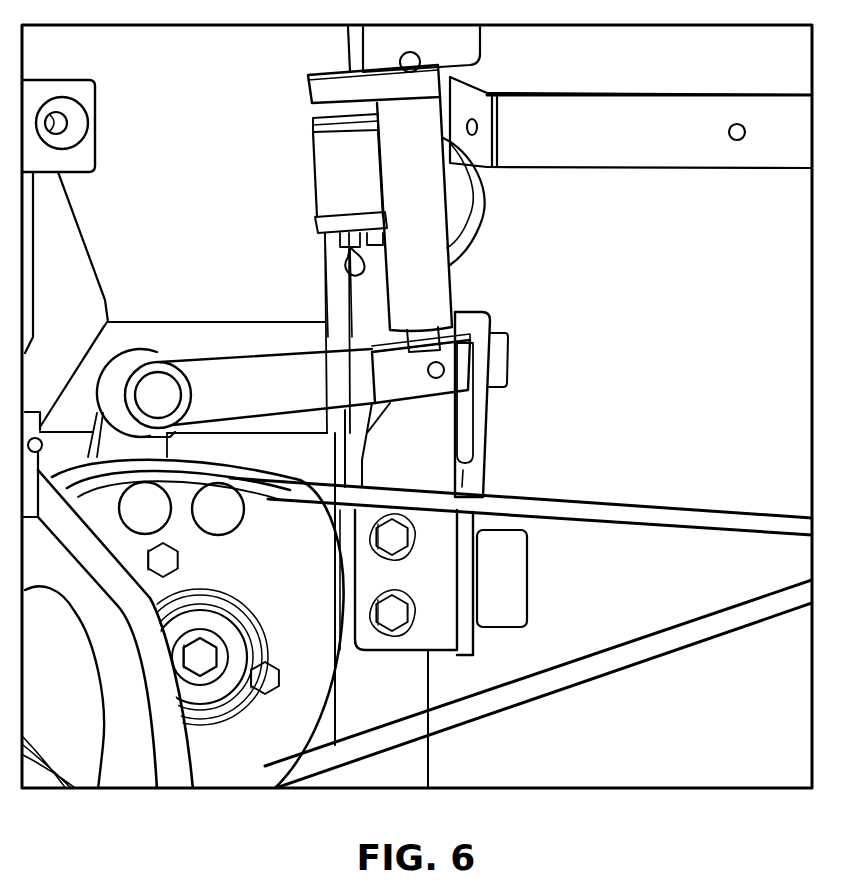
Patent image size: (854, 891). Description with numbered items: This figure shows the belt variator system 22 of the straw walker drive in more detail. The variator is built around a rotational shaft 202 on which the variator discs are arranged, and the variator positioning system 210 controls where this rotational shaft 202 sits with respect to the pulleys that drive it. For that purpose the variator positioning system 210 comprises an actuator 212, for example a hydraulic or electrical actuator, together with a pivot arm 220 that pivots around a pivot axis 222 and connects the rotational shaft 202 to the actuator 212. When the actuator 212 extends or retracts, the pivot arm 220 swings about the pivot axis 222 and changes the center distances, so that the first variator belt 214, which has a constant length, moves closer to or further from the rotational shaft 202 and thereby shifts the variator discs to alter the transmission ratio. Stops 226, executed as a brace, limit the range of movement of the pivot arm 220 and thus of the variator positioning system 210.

The belt variator system 22 is at (183, 667).
The rotational shaft 202 is at (202, 660).
The variator positioning system 210 is at (533, 333).
The actuator 212 is at (438, 278).
The first variator belt 214 is at (609, 512).
The pivot arm 220 is at (273, 367).
The pivot axis 222 is at (158, 383).
The stops 226 is at (487, 417).